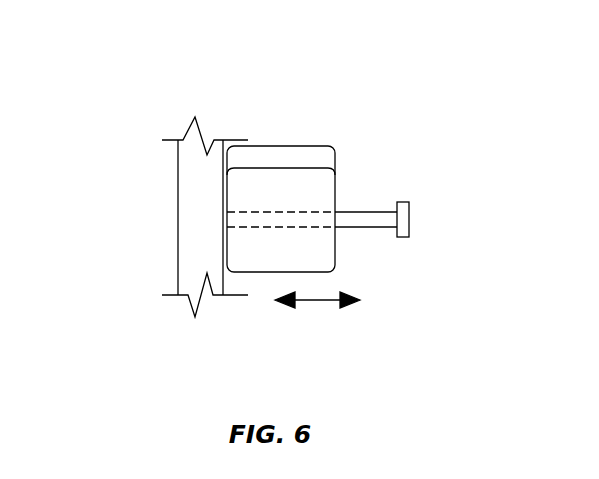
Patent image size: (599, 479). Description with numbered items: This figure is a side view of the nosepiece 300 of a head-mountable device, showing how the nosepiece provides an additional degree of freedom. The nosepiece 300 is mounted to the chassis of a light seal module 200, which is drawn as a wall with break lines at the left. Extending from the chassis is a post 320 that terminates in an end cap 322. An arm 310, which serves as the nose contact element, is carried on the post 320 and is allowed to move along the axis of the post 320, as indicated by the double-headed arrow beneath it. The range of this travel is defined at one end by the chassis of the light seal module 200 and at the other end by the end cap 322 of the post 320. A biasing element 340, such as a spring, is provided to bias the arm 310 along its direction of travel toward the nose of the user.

The nosepiece 300 is at (58, 81).
The light seal module 200 is at (200, 180).
The arm 310 is at (268, 185).
The post 320 is at (371, 213).
The end cap 322 is at (402, 223).
The biasing element 340 is at (223, 222).